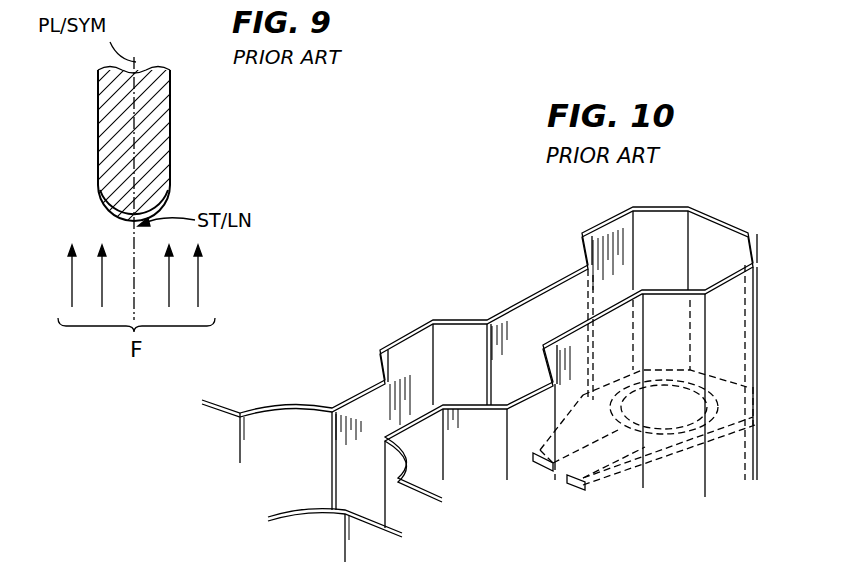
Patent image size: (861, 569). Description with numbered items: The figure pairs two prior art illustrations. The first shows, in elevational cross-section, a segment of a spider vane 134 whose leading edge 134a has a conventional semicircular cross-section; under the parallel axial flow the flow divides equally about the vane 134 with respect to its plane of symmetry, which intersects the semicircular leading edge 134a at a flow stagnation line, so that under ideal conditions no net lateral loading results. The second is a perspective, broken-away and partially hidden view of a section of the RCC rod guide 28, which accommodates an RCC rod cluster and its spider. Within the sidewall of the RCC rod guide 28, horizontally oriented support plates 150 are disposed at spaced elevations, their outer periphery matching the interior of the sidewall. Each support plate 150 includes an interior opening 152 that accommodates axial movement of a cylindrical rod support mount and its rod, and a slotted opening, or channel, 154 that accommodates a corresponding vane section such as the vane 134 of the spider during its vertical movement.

In FIG. 9, the vane 134 is at (172, 113).
In FIG. 9, the leading edge 134a is at (165, 206).
In FIG. 10, the RCC rod guide 28 is at (413, 330).
In FIG. 10, the support plate 150 is at (753, 392).
In FIG. 10, the interior opening 152 is at (697, 368).
In FIG. 10, the slotted opening 154 is at (611, 468).